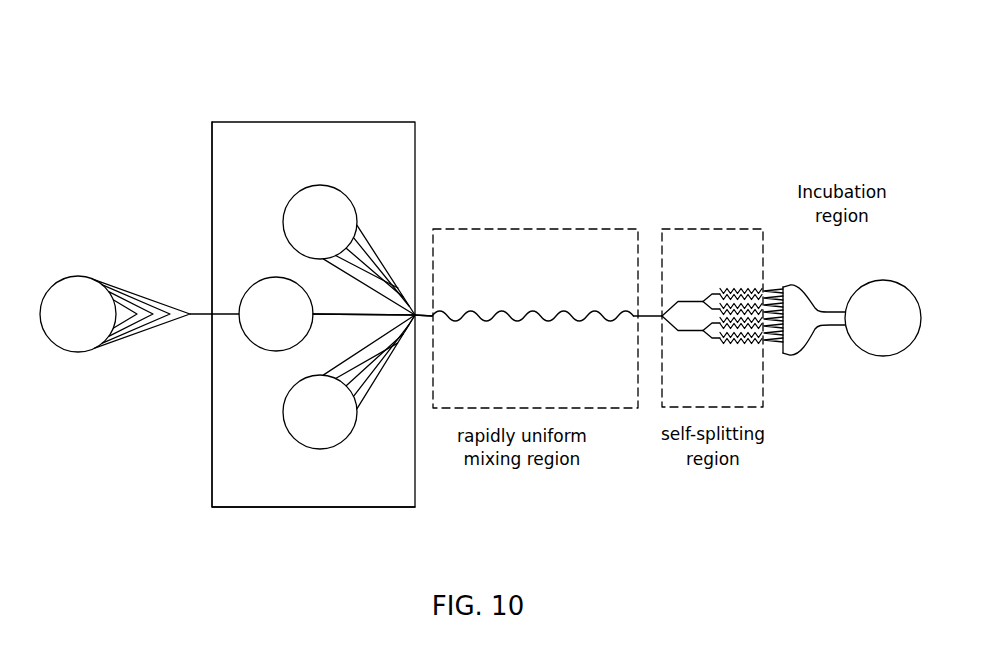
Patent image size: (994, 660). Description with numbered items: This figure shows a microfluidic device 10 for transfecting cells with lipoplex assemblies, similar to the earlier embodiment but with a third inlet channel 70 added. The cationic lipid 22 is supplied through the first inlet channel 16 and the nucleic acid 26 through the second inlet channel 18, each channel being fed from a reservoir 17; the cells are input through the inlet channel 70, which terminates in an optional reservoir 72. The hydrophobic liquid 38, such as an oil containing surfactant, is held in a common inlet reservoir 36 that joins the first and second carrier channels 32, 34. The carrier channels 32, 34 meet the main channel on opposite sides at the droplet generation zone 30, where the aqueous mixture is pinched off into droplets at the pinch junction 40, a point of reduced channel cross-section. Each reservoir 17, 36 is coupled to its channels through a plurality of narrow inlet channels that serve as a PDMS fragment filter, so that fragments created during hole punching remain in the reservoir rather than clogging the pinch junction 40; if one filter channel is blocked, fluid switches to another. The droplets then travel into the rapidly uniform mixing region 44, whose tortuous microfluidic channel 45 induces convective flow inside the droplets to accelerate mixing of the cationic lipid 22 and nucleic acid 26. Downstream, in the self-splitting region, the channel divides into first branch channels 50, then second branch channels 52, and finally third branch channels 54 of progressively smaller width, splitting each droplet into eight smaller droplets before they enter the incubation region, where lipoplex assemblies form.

The microfluidic device 10 is at (645, 105).
The first inlet channel 16 is at (404, 298).
The reservoir 17 is at (310, 307).
The second inlet channel 18 is at (396, 328).
The cationic lipid 22 is at (321, 185).
The nucleic acid 26 is at (349, 438).
The droplet generation zone 30 is at (403, 350).
The first carrier channel 32 is at (211, 246).
The second carrier channel 34 is at (212, 425).
The common inlet reservoir 36 is at (58, 346).
The hydrophobic liquid 38 is at (93, 279).
The pinch junction 40 is at (416, 314).
The mixing region 44 is at (554, 228).
The tortuous microfluidic channel 45 is at (546, 322).
The first branch channels 50 is at (687, 301).
The second branch channels 52 is at (712, 294).
The third branch channels 54 is at (742, 285).
The third inlet channel 70 is at (329, 314).
The reservoir 72 is at (259, 347).